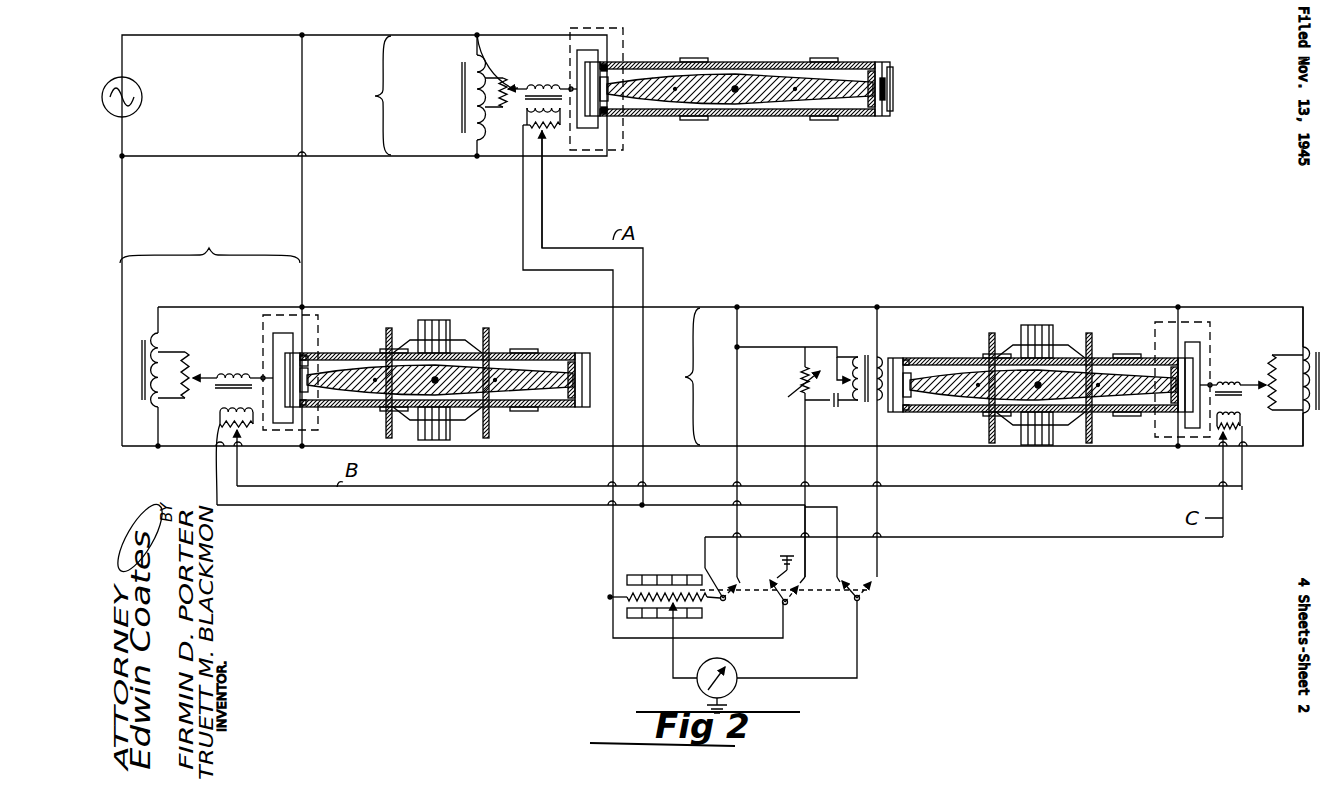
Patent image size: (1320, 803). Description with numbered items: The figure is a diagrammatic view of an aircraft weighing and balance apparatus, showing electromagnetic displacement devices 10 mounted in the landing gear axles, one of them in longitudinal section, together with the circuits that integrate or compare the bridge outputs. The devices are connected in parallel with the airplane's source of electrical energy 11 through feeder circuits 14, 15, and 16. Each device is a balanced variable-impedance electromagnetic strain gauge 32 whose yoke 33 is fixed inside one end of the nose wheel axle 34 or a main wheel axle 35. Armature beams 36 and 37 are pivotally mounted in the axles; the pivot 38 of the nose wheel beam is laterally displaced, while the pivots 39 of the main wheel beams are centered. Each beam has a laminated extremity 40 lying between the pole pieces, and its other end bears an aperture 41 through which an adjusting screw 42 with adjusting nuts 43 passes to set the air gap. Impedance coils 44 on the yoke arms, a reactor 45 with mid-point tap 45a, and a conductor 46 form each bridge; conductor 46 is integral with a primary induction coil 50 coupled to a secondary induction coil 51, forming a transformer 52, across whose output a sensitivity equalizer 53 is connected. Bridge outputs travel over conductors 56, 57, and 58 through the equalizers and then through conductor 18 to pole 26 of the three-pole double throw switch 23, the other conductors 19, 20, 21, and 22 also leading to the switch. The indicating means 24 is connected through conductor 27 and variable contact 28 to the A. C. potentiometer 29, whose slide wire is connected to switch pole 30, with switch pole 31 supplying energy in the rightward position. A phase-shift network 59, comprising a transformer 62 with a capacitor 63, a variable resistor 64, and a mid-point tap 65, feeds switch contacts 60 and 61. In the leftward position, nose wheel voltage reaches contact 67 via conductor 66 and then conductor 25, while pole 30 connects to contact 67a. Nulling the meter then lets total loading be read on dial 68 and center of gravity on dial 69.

The electromagnetic displacement device 10 is at (1195, 322).
The source of electrical energy 11 is at (142, 97).
The feeder circuit 14 is at (365, 95).
The feeder circuit 15 is at (210, 237).
The feeder circuit 16 is at (675, 376).
The conductor 18 is at (878, 565).
The conductor 19 is at (837, 540).
The conductor 20 is at (819, 541).
The supply line 21 is at (739, 523).
The conductor 22 is at (705, 537).
The three-pole, double throw switch 23 is at (812, 592).
The indicating means 24 is at (737, 672).
The conductor 25 is at (858, 660).
The switch pole 26 is at (860, 598).
The conductor 27 is at (672, 662).
The variable contact 28 is at (678, 614).
The A. C. potentiometer 29 is at (654, 576).
The switch pole 30 is at (728, 600).
The switch pole 31 is at (788, 606).
The electromagnetic strain gauge 32 is at (305, 362).
The yoke 33 is at (265, 376).
The nose wheel axle 34 is at (810, 62).
The main wheel axle 35 is at (495, 358).
The beam 36 is at (750, 116).
The beam 37 is at (530, 388).
The pivot 38 is at (737, 86).
The pivot 39 is at (437, 382).
The laminated extremity 40 is at (612, 75).
The aperture 41 is at (893, 85).
The adjusting screw 42 is at (888, 62).
The adjusting nut 43 is at (890, 100).
The impedance coil 44 is at (603, 66).
The reactor 45 is at (476, 58).
The mid-point tap 45a is at (477, 35).
The conductor 46 is at (571, 62).
The primary induction coil 50 is at (535, 86).
The secondary induction coil 51 is at (525, 112).
The transformer 52 is at (210, 397).
The sensitivity equalizer 53 is at (543, 150).
The conductor 56 is at (644, 480).
The conductor 57 is at (478, 508).
The conductor 58 is at (1053, 490).
The phase-shift network 59 is at (823, 355).
The switch contact 60 is at (800, 582).
The switch contact 61 is at (741, 575).
The transformer 62 is at (868, 354).
The capacitor 63 is at (835, 410).
The variable resistor 64 is at (800, 382).
The mid-point tap 65 is at (855, 348).
The conductor 66 is at (838, 510).
The switch contact 67 is at (838, 577).
The switch contact 67a is at (706, 568).
The dial 68 is at (650, 575).
The dial 69 is at (610, 613).